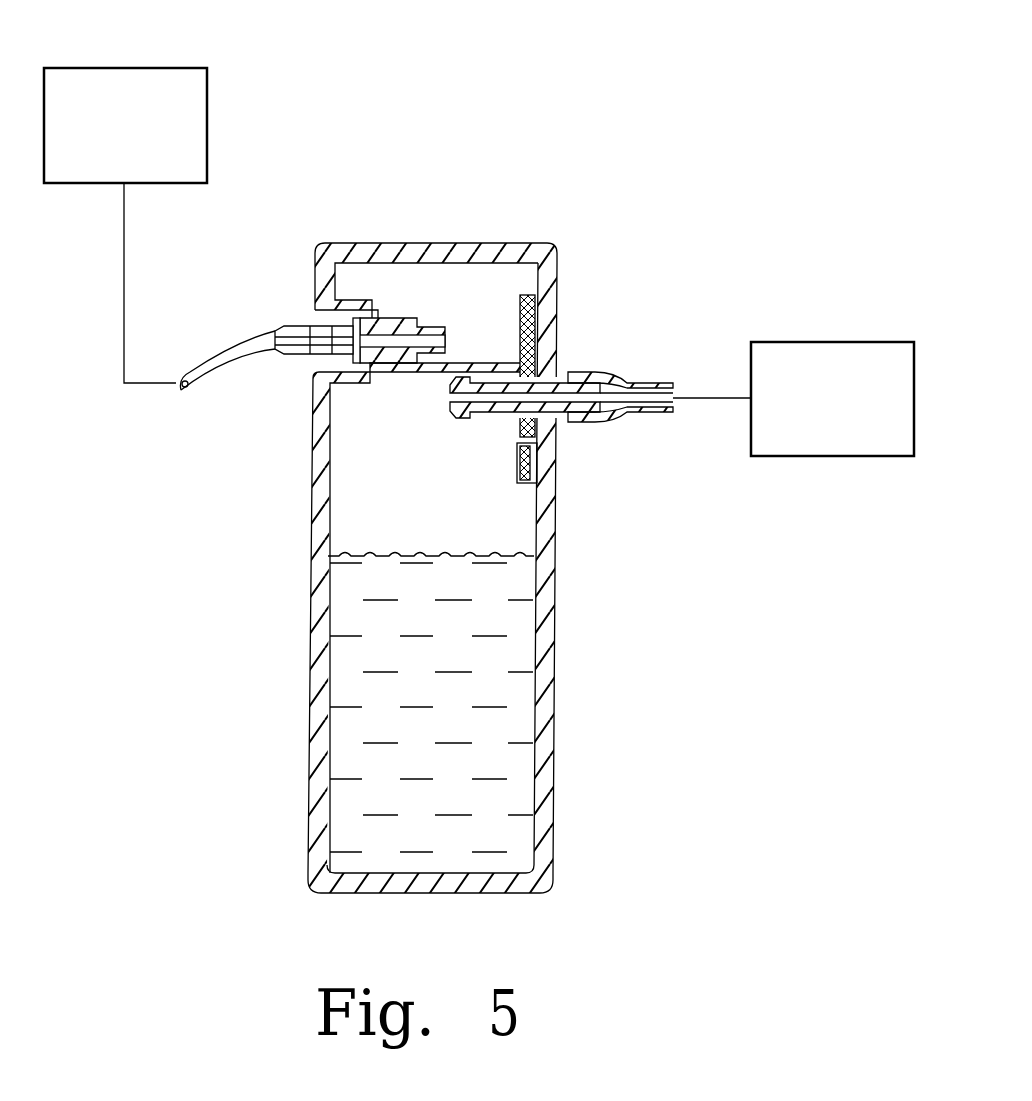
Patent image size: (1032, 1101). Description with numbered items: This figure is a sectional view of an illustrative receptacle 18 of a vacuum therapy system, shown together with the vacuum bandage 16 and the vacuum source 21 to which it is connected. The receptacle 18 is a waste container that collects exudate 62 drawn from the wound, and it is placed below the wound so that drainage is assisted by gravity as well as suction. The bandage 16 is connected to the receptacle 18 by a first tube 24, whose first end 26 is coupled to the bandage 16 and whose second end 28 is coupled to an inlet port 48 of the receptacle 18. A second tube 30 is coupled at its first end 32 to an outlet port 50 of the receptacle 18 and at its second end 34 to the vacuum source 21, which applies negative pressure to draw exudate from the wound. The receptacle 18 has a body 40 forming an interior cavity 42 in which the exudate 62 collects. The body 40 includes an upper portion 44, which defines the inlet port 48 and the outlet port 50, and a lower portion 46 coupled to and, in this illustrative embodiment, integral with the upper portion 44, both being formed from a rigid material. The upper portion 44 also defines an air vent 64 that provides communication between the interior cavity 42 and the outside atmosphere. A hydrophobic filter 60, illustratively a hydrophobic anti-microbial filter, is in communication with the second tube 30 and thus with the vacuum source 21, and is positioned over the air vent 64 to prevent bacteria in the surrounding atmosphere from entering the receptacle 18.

The vacuum bandage 16 is at (72, 68).
The receptacle 18 is at (620, 177).
The vacuum source 21 is at (793, 342).
The first tube 24 is at (182, 356).
The first end 26 is at (123, 255).
The second end 28 is at (235, 348).
The second tube 30 is at (632, 362).
The first end 32 is at (655, 385).
The second end 34 is at (700, 400).
The body 40 is at (445, 578).
The interior cavity 42 is at (466, 308).
The upper portion 44 is at (295, 437).
The lower portion 46 is at (566, 792).
The inlet port 48 is at (310, 312).
The outlet port 50 is at (503, 430).
The hydrophobic filter 60 is at (540, 297).
The exudate 62 is at (385, 565).
The air vent 64 is at (572, 440).